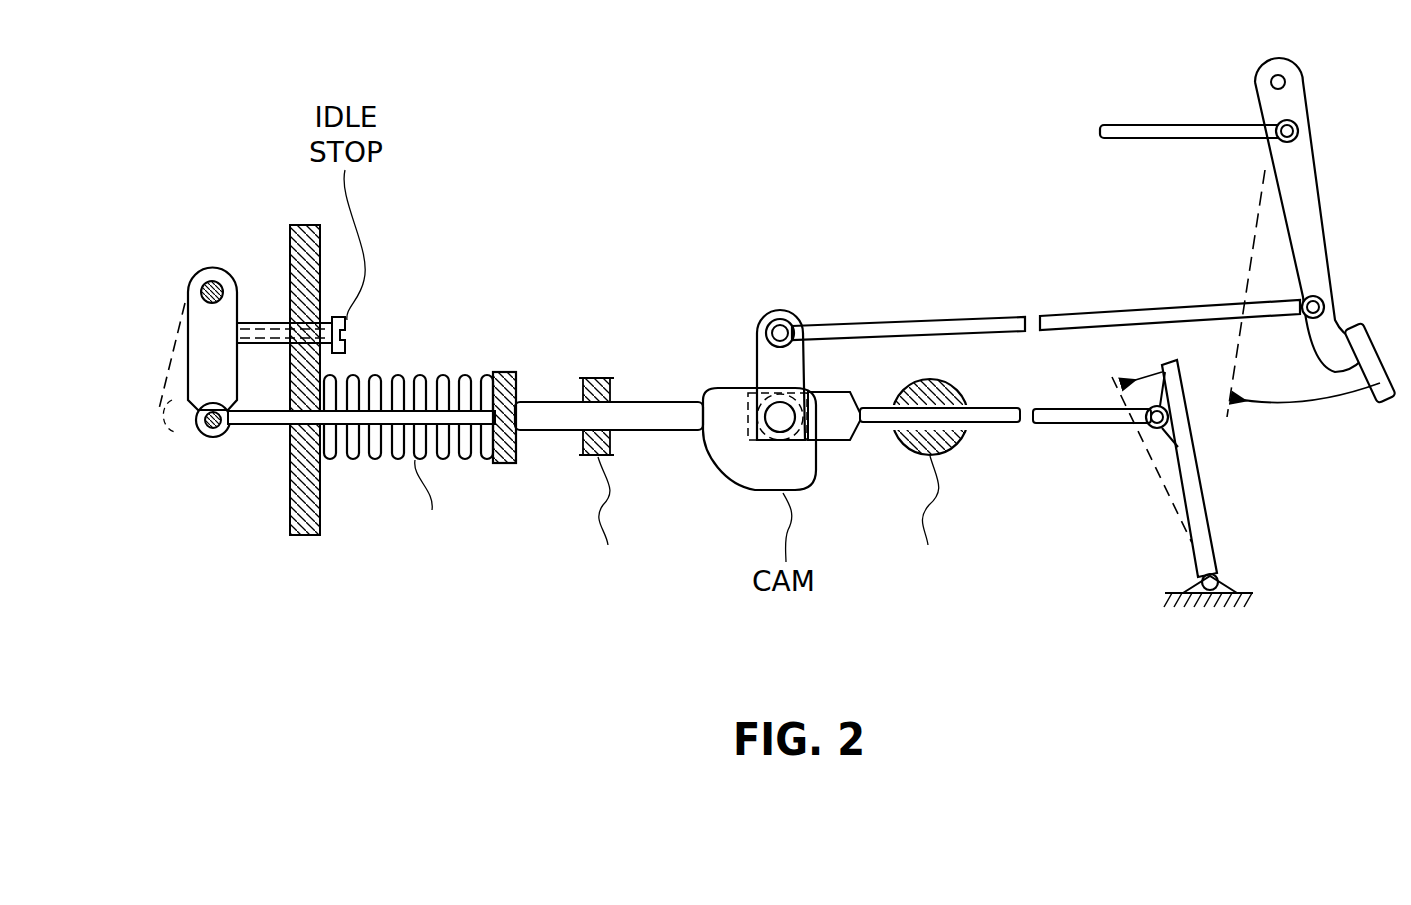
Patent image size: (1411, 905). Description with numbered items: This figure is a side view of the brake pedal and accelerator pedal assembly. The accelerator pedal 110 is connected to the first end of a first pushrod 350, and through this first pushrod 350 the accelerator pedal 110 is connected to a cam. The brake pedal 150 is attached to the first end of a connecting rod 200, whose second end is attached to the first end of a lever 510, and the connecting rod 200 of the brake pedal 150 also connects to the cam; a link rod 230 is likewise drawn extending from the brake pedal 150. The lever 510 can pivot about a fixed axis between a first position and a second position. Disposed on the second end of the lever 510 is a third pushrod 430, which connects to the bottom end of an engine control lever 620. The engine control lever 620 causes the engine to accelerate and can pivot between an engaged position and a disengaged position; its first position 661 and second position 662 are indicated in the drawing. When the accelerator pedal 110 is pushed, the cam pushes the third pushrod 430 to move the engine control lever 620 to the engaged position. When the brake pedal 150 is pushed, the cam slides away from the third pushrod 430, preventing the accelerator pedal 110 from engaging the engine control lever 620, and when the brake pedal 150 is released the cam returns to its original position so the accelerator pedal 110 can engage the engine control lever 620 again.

The engine control lever 620 is at (180, 320).
The first position of engine control lever 661 is at (167, 393).
The second position of engine control lever 662 is at (238, 385).
The third pushrod 430 is at (545, 401).
The lever 510 is at (753, 350).
The connecting rod 200 is at (985, 316).
The first pushrod 350 is at (1063, 423).
The accelerator pedal 110 is at (1212, 540).
The link rod 230 is at (1140, 124).
The brake pedal 150 is at (1318, 157).